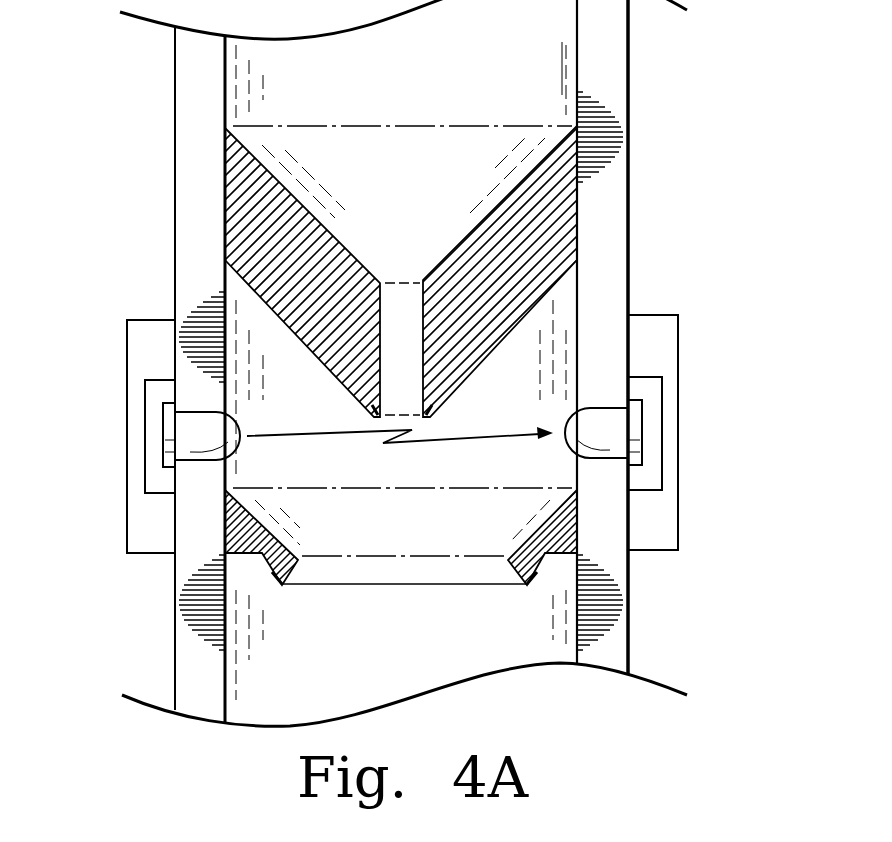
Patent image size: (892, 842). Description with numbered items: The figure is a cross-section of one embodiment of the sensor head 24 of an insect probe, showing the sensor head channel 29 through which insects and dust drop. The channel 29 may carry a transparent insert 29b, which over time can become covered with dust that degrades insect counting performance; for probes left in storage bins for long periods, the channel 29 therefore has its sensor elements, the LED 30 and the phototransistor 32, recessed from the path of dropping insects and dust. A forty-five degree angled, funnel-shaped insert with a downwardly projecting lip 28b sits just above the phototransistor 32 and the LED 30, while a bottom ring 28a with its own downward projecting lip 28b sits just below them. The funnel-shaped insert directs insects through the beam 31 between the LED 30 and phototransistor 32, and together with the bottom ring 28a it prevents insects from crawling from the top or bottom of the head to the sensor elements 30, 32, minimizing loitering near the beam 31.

The sensor head 24 is at (138, 92).
The sensor head channel 29 is at (535, 58).
The transparent insert 29b is at (277, 168).
The bottom ring 28a is at (278, 536).
The downwardly projecting lip 28b is at (360, 402).
The LED 30 is at (168, 440).
The beam 31 is at (352, 434).
The phototransistor 32 is at (615, 428).